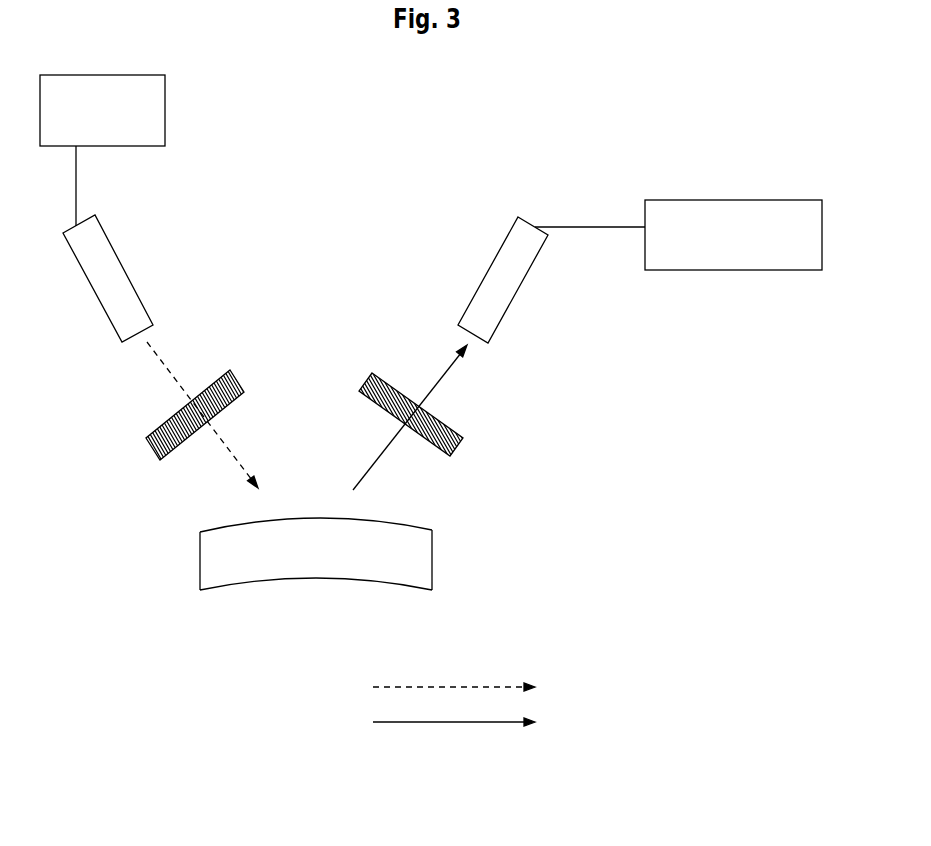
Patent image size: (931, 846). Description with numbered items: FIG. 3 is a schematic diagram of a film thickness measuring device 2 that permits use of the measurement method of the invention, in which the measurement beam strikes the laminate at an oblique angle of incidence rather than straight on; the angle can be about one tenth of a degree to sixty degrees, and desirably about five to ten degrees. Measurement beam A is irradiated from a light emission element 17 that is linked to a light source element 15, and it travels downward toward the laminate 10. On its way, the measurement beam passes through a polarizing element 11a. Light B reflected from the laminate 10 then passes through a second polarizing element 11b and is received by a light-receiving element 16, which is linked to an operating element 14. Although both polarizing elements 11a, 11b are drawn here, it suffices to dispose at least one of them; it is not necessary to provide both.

The film thickness measuring device 2 is at (431, 403).
The laminate 10 is at (418, 535).
The polarizing element 11a is at (147, 440).
The polarizing element 11b is at (500, 467).
The operating element 14 is at (723, 213).
The light source element 15 is at (148, 95).
The light-receiving element 16 is at (483, 307).
The light emission element 17 is at (125, 293).